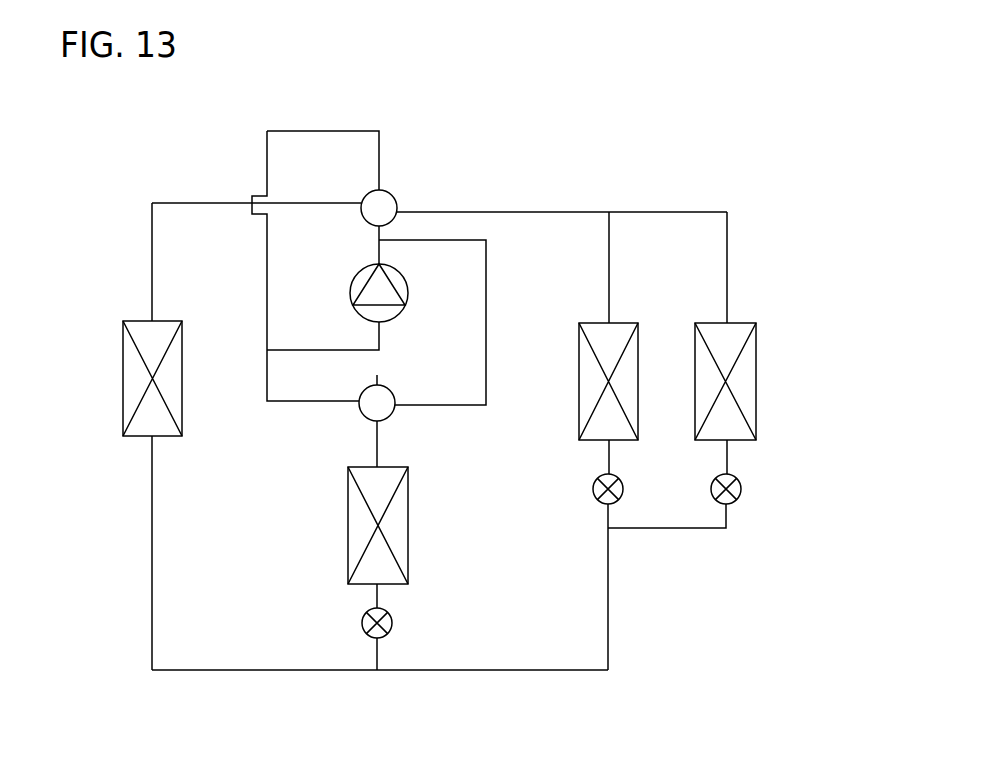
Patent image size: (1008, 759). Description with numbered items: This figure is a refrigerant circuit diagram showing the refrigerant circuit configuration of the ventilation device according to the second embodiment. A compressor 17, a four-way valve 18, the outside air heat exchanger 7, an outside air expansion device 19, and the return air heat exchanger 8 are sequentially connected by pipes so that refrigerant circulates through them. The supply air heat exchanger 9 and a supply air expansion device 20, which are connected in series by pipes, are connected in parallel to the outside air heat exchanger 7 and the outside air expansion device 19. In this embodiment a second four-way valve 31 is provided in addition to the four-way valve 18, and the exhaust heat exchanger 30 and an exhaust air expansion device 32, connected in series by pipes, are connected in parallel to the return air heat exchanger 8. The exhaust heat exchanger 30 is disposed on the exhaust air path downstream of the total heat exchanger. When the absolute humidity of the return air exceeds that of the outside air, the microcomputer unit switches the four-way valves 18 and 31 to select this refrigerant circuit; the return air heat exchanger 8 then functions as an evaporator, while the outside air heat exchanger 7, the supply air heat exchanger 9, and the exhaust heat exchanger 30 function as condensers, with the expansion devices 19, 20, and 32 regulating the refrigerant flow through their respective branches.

The outside air heat exchanger 7 is at (628, 322).
The return air heat exchanger 8 is at (122, 362).
The supply air heat exchanger 9 is at (740, 322).
The compressor 17 is at (408, 303).
The four-way valve 18 is at (391, 195).
The outside air expansion device 19 is at (624, 495).
The supply air expansion device 20 is at (741, 496).
The exhaust heat exchanger 30 is at (347, 565).
The four-way valve 31 is at (390, 420).
The exhaust air expansion device 32 is at (386, 631).